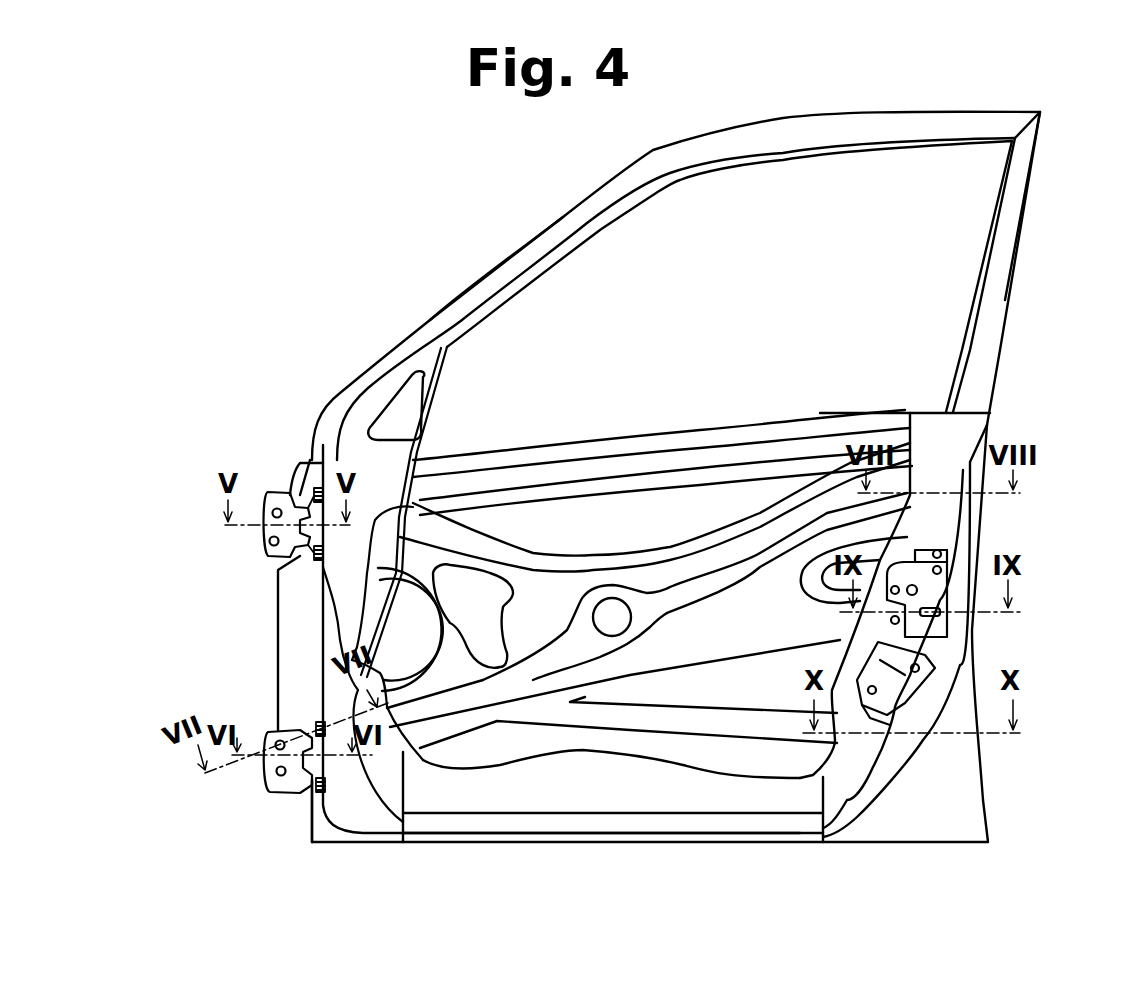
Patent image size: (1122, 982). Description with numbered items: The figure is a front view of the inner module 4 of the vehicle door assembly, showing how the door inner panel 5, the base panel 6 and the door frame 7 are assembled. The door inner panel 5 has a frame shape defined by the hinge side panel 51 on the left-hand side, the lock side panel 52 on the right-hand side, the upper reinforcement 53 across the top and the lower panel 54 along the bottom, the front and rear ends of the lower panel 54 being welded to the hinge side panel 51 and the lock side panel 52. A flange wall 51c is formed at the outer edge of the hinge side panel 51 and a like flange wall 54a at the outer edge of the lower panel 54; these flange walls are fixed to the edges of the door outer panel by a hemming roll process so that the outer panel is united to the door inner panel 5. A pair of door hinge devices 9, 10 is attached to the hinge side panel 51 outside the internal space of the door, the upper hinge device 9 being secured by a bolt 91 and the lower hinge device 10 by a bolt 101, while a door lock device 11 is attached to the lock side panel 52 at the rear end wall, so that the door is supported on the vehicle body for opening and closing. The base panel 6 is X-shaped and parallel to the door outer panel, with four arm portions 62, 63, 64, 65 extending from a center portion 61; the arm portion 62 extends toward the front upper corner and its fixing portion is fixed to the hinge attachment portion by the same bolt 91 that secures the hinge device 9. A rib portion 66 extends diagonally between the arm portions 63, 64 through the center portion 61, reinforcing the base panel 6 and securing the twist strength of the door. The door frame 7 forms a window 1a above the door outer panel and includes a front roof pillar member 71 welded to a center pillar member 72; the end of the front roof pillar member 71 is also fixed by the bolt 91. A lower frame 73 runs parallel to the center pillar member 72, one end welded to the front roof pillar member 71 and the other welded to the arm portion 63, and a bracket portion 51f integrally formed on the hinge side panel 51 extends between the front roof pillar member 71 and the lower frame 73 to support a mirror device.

The inner module 4 is at (447, 280).
The door inner panel 5 is at (990, 805).
The base panel 6 is at (593, 550).
The door frame 7 is at (787, 118).
The window 1a is at (907, 150).
The door hinge device 9 is at (265, 500).
The door hinge device 10 is at (265, 735).
The door lock device 11 is at (940, 578).
The hinge side panel 51 is at (347, 610).
The flange wall 51c is at (283, 648).
The bracket portion 51f is at (405, 390).
The lock side panel 52 is at (930, 515).
The upper reinforcement 53 is at (683, 462).
The lower panel 54 is at (630, 812).
The flange wall 54a is at (568, 845).
The center portion 61 is at (618, 630).
The arm portion 62 is at (395, 549).
The arm portion 63 is at (407, 717).
The arm portion 64 is at (910, 413).
The arm portion 65 is at (908, 634).
The rib portion 66 is at (760, 548).
The front roof pillar member 71 is at (560, 222).
The center pillar member 72 is at (1005, 275).
The lower frame 73 is at (410, 600).
The bolt 91 is at (300, 494).
The bolt 101 is at (316, 728).